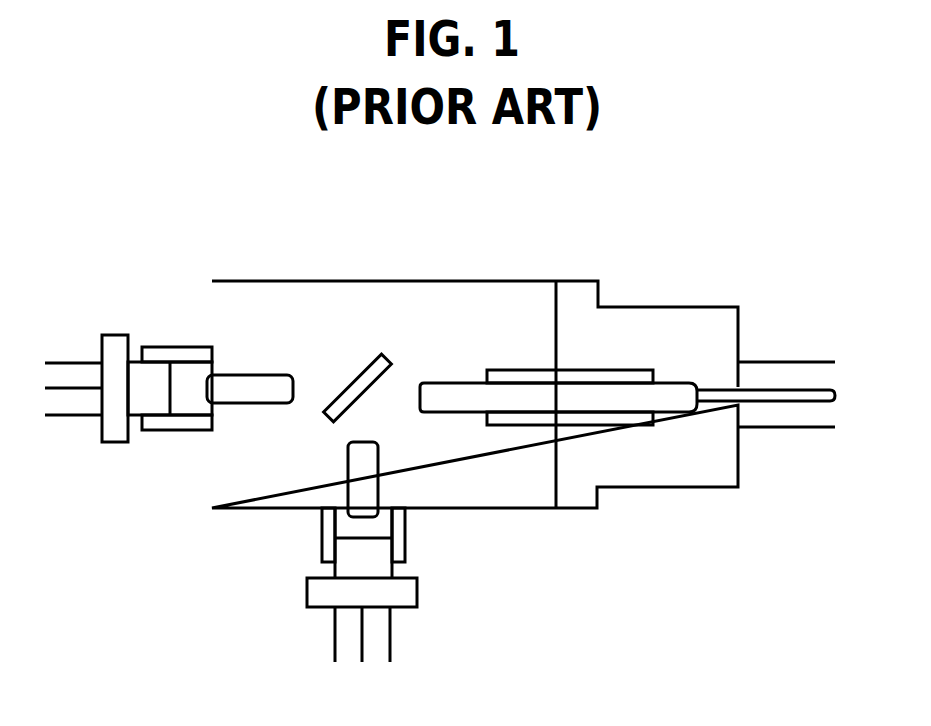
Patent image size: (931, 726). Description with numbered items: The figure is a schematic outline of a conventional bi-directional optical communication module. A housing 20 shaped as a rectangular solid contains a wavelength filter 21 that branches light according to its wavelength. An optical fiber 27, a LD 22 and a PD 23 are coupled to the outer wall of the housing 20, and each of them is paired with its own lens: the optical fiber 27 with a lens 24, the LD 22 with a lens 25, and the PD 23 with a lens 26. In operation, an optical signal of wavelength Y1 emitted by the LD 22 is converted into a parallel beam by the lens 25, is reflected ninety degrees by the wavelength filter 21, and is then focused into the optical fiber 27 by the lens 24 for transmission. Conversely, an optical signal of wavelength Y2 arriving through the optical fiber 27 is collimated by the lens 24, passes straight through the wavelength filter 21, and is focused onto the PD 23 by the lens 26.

The housing 20 is at (348, 283).
The wavelength filter 21 is at (386, 355).
The LD 22 is at (417, 588).
The PD 23 is at (120, 333).
The lens 24 is at (470, 380).
The lens 25 is at (378, 467).
The lens 26 is at (240, 380).
The optical fiber 27 is at (783, 388).